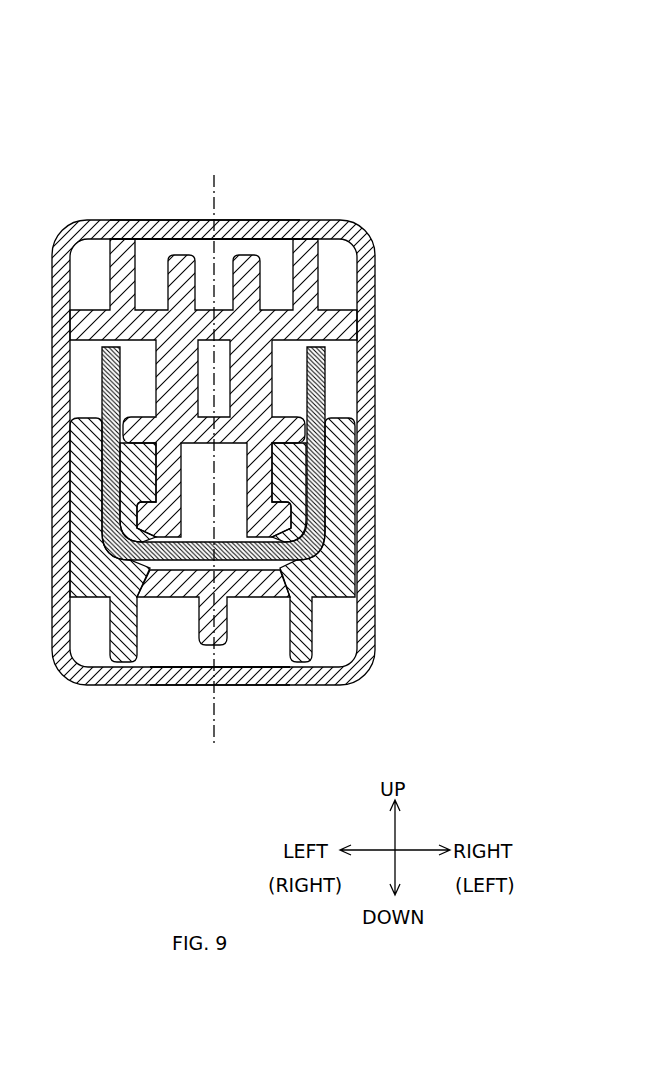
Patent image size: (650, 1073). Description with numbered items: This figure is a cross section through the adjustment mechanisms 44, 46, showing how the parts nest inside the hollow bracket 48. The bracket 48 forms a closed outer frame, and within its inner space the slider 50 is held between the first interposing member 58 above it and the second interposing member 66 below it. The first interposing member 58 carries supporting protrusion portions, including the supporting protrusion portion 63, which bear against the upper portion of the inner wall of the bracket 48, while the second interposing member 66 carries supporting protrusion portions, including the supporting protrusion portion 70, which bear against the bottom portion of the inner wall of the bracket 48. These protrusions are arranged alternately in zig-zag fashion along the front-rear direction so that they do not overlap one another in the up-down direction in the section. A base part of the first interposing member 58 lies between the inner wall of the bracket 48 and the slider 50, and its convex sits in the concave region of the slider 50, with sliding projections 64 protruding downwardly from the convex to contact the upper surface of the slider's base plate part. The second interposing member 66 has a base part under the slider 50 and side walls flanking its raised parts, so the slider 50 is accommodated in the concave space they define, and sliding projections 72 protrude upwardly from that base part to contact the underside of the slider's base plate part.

The adjustment mechanism 44 is at (123, 95).
The adjustment mechanism 46 is at (242, 457).
The bracket 48 is at (367, 570).
The slider 50 is at (318, 402).
The first interposing member 58 is at (327, 315).
The supporting protrusion portion 63 is at (300, 240).
The sliding projections 64 is at (173, 528).
The second interposing member 66 is at (327, 577).
The supporting protrusion portion 70 is at (270, 681).
The sliding projections 72 is at (157, 560).